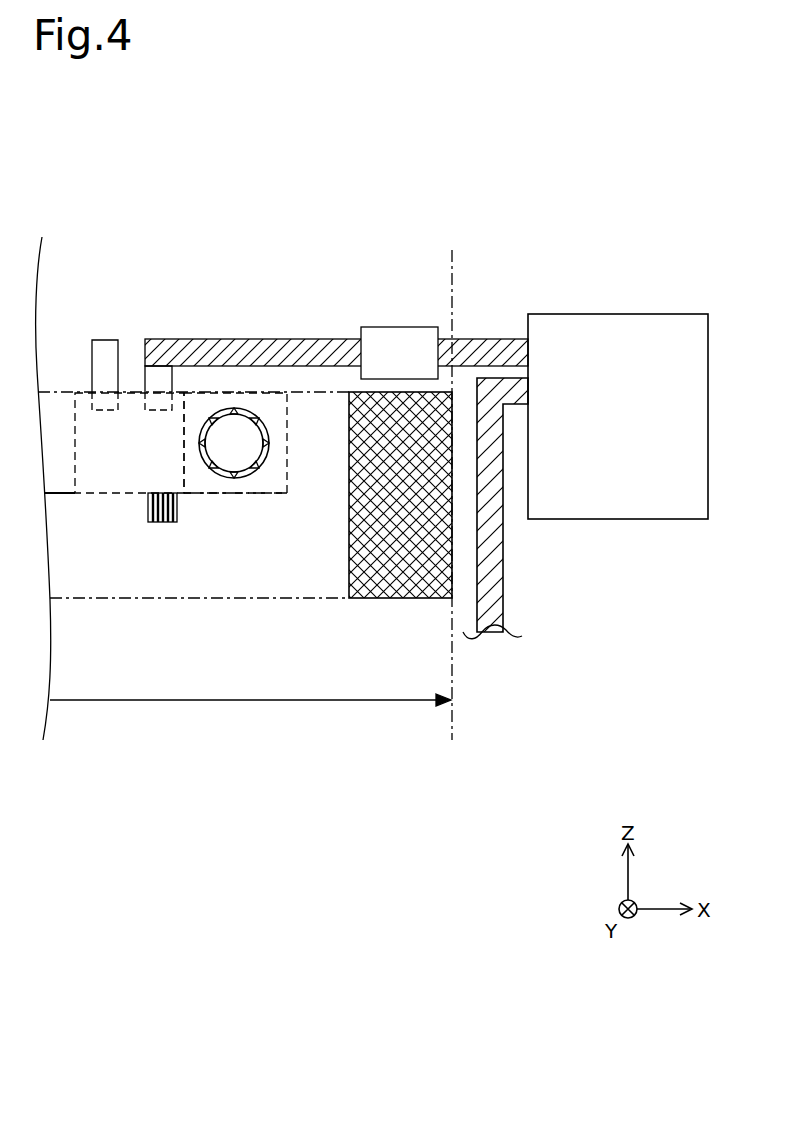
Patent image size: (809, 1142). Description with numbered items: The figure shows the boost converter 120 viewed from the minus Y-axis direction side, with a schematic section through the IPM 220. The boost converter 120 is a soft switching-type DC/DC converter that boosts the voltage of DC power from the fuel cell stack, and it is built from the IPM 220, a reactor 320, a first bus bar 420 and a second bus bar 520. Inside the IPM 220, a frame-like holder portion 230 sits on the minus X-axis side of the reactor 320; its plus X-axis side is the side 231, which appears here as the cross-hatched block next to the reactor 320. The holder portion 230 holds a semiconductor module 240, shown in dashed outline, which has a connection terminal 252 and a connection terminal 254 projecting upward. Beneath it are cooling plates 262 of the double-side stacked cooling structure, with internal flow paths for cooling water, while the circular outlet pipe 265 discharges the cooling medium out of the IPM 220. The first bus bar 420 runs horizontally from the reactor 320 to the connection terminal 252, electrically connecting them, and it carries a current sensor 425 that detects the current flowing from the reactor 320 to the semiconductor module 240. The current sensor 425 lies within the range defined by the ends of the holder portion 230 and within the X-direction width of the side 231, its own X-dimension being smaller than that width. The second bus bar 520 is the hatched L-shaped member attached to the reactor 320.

The boost converter 120 is at (88, 181).
The IPM 220 is at (301, 426).
The holder portion 230 is at (400, 534).
The side 231 is at (400, 534).
The semiconductor module 240 is at (95, 472).
The connection terminal 252 is at (145, 380).
The connection terminal 254 is at (108, 340).
The cooling plate 262 is at (195, 497).
The outlet pipe 265 is at (270, 443).
The reactor 320 is at (617, 314).
The first bus bar 420 is at (300, 339).
The current sensor 425 is at (402, 327).
The second bus bar 520 is at (503, 560).